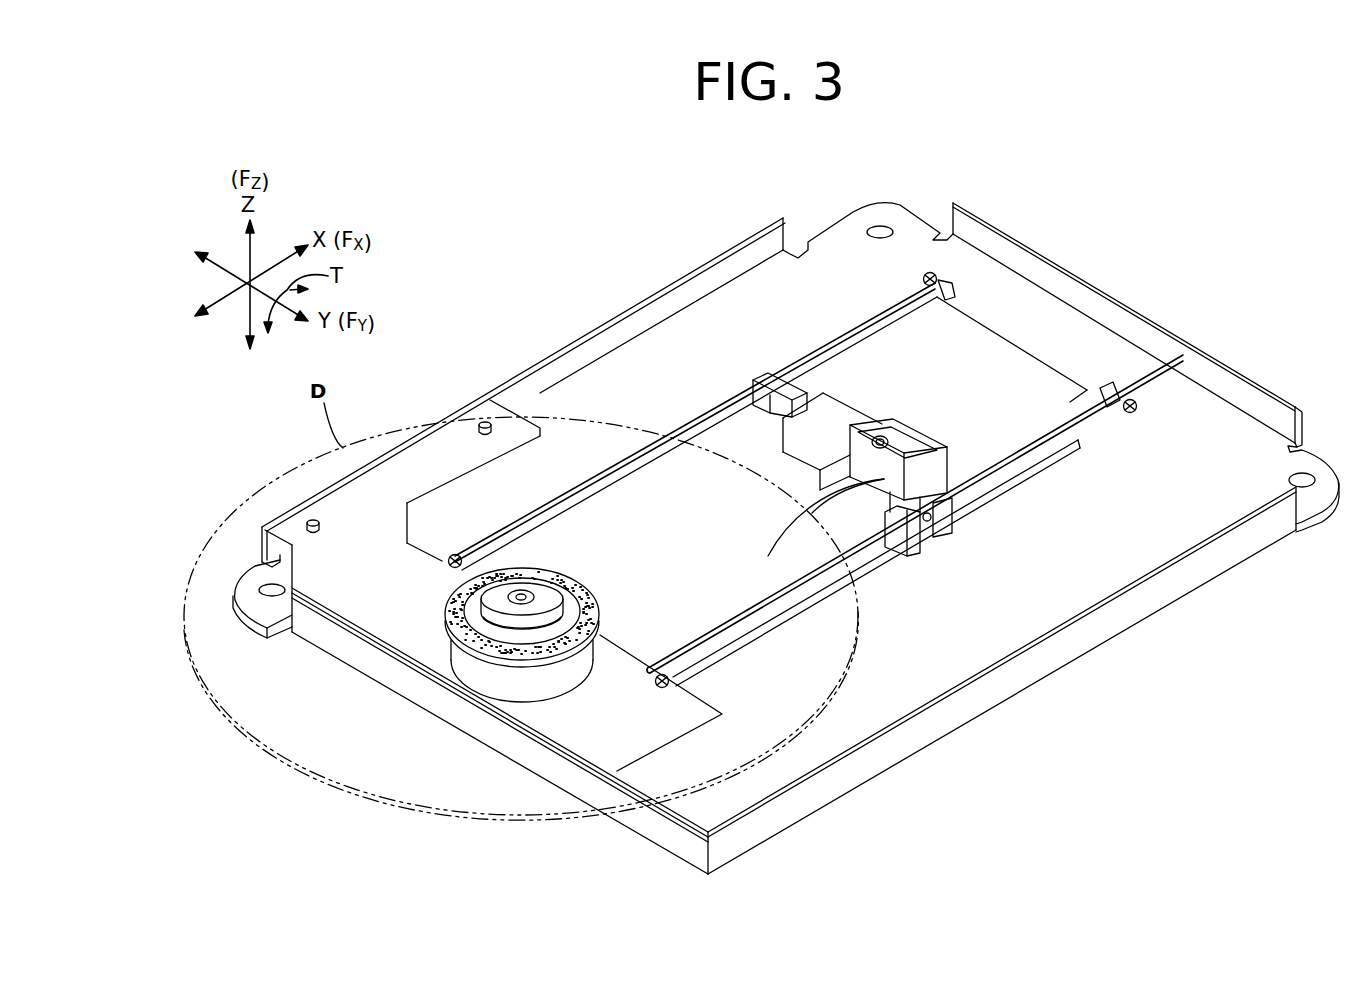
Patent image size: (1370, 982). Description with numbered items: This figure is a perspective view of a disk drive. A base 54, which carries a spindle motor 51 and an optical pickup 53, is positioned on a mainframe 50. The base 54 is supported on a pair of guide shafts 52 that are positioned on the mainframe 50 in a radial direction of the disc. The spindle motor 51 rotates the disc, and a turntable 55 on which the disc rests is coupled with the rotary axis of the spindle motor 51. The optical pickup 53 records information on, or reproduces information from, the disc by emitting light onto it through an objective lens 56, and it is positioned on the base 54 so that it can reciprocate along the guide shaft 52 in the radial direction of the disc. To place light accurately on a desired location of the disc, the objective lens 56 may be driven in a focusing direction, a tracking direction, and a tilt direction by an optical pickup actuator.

The mainframe 50 is at (1217, 570).
The spindle motor 51 is at (493, 683).
The guide shafts 52 is at (857, 335).
The optical pickup 53 is at (867, 470).
The base 54 is at (790, 466).
The turntable 55 is at (445, 643).
The objective lens 56 is at (882, 438).